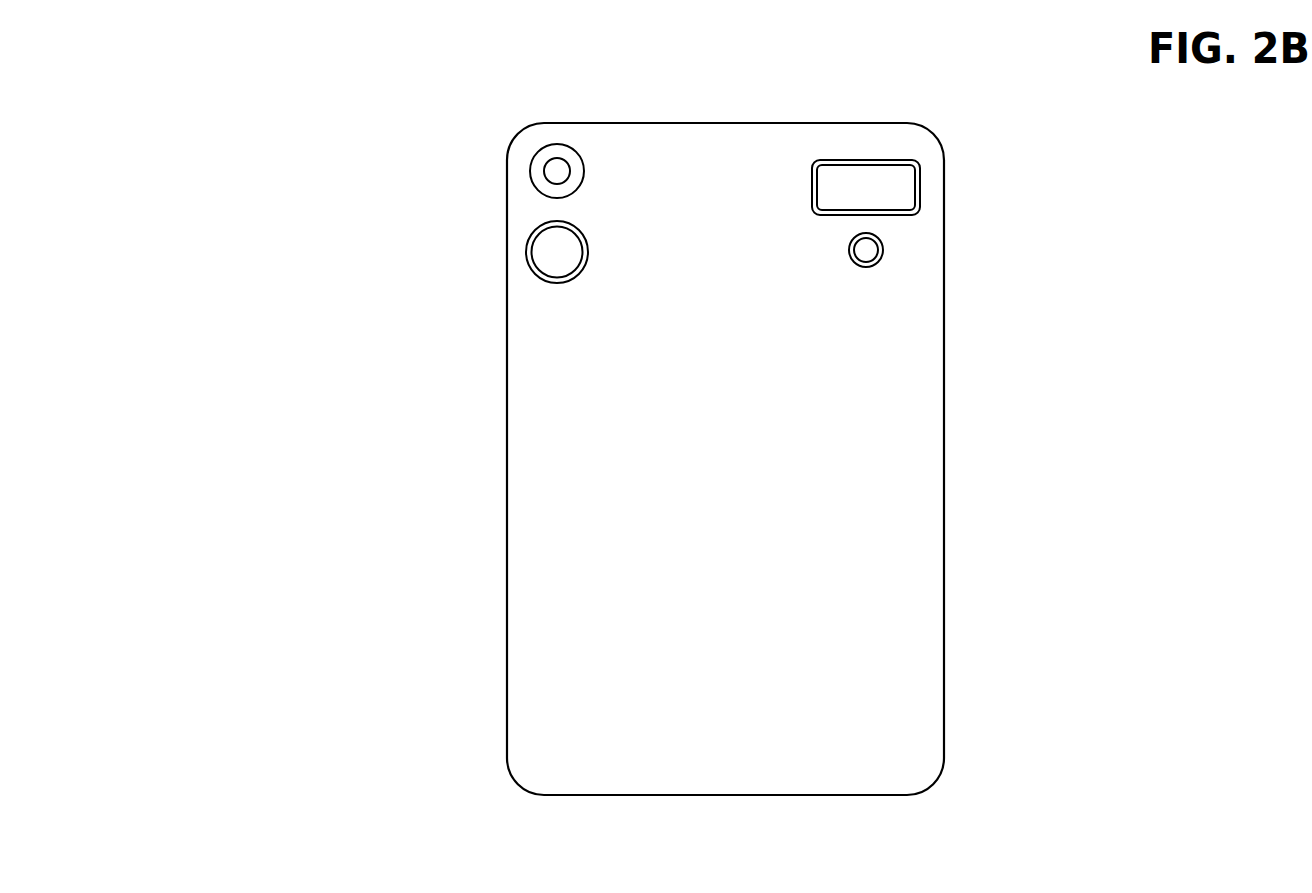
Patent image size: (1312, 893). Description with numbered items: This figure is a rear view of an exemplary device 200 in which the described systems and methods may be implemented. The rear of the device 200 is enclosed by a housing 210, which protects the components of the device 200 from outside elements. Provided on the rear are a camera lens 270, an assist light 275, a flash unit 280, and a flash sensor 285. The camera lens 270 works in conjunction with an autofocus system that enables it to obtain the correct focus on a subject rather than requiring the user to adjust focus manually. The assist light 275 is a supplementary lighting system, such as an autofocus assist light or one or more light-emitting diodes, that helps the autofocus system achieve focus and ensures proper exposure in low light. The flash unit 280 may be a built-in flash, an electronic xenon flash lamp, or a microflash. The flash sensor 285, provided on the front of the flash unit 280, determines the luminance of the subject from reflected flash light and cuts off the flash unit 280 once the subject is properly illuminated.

The device 200 is at (343, 75).
The housing 210 is at (507, 458).
The camera lens 270 is at (532, 165).
The assist light 275 is at (558, 253).
The flash unit 280 is at (866, 188).
The flash sensor 285 is at (866, 250).